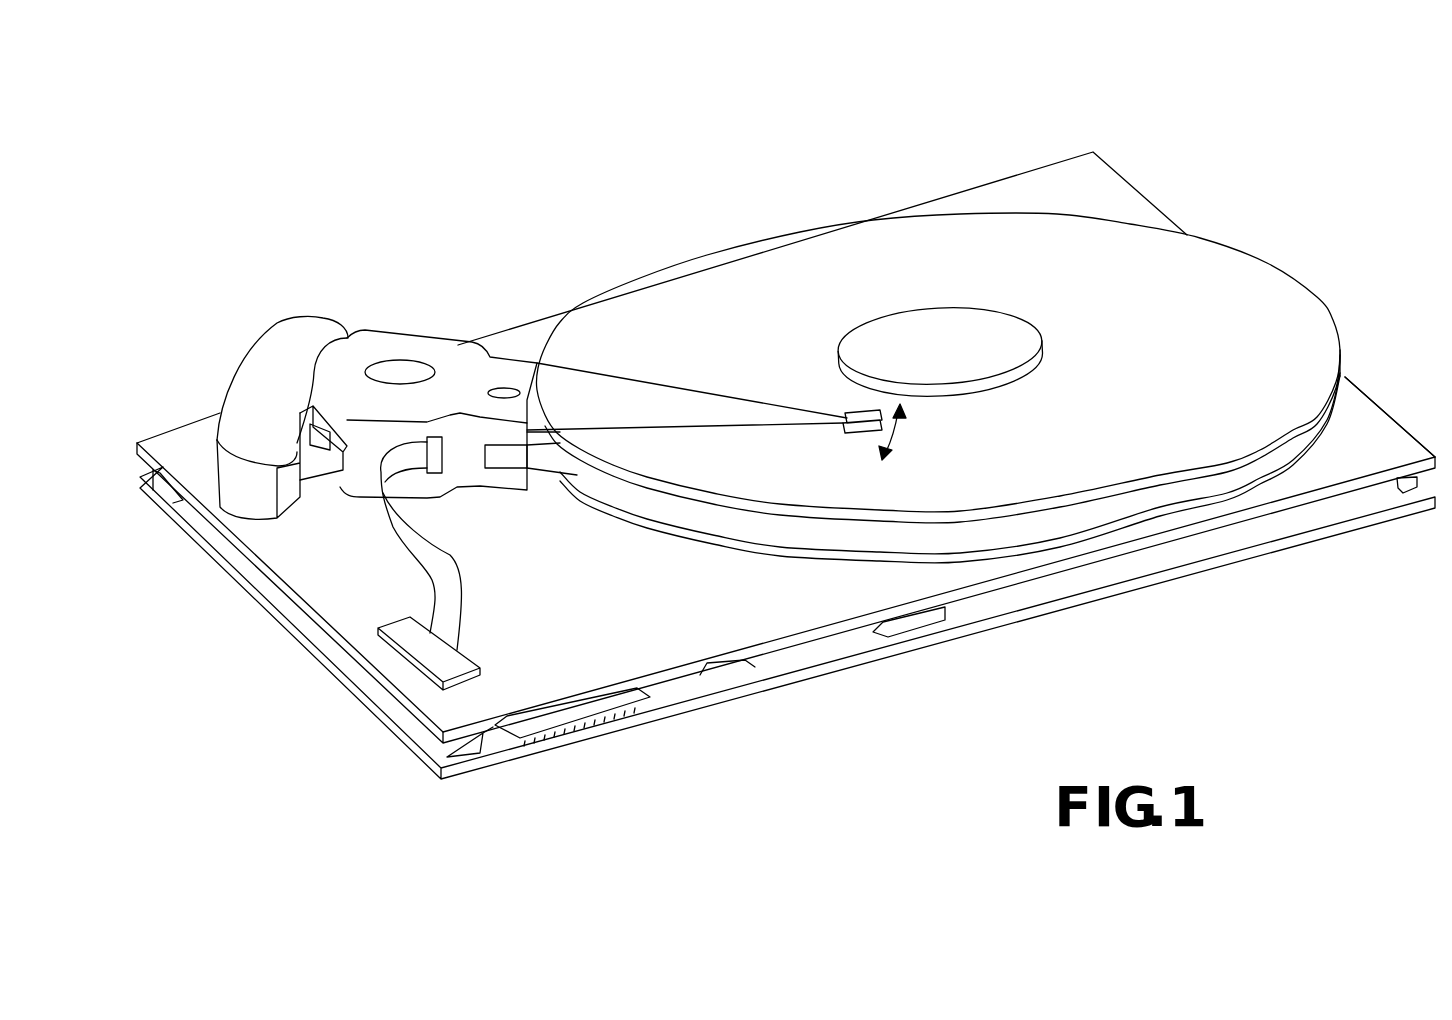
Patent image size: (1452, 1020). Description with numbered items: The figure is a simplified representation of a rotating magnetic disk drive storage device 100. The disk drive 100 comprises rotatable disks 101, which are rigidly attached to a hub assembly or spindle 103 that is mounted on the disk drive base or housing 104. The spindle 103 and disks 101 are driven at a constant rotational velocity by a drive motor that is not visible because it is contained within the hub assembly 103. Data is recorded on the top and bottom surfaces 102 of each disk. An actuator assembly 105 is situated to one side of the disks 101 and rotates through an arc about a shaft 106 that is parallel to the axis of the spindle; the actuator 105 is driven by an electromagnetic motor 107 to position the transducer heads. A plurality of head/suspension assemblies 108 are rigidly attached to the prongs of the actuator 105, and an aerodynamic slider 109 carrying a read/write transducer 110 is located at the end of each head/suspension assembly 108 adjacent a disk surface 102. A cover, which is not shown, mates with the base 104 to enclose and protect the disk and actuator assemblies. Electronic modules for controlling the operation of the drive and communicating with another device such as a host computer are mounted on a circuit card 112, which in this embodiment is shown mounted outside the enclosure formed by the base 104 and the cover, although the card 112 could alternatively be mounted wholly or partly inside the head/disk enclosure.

The rotating magnetic disk drive storage device 100 is at (1190, 168).
The rotatable disks 101 is at (1290, 427).
The disk surfaces 102 is at (880, 240).
The hub assembly or spindle 103 is at (980, 333).
The disk drive base or housing 104 is at (1362, 407).
The actuator assembly 105 is at (440, 333).
The shaft 106 is at (400, 370).
The electromagnetic motor 107 is at (222, 405).
The head/suspension assemblies 108 is at (582, 400).
The aerodynamic slider 109 is at (882, 437).
The read/write transducer 110 is at (883, 425).
The circuit card 112 is at (812, 680).